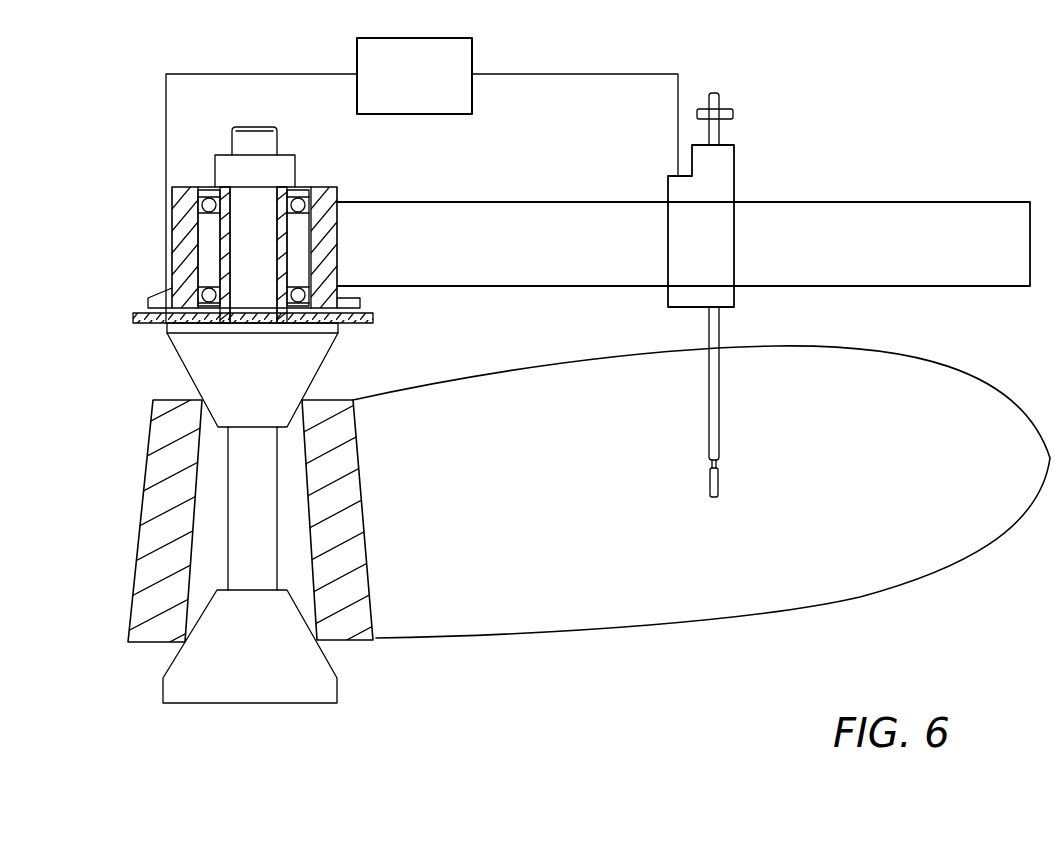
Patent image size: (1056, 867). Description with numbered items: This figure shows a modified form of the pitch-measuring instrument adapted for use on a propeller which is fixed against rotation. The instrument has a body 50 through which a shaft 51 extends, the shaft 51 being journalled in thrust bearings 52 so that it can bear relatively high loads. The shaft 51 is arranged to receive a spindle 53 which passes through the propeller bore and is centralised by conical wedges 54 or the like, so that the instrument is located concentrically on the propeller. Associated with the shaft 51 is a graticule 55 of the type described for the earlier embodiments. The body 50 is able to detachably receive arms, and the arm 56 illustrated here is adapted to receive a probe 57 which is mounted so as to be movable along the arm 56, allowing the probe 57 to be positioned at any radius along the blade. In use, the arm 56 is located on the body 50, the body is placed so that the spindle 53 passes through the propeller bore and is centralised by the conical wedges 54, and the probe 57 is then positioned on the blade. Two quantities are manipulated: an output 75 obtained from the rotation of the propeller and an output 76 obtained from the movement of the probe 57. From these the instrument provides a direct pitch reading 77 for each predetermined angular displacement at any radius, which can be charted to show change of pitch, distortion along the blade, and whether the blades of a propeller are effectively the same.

The body 50 is at (166, 260).
The shaft 51 is at (214, 247).
The thrust bearings 52 is at (207, 187).
The spindle 53 is at (235, 137).
The conical wedges 54 is at (207, 376).
The graticule 55 is at (344, 305).
The arm 56 is at (497, 217).
The probe 57 is at (718, 165).
The output 75 is at (166, 124).
The output 76 is at (678, 92).
The direct pitch reading 77 is at (472, 48).